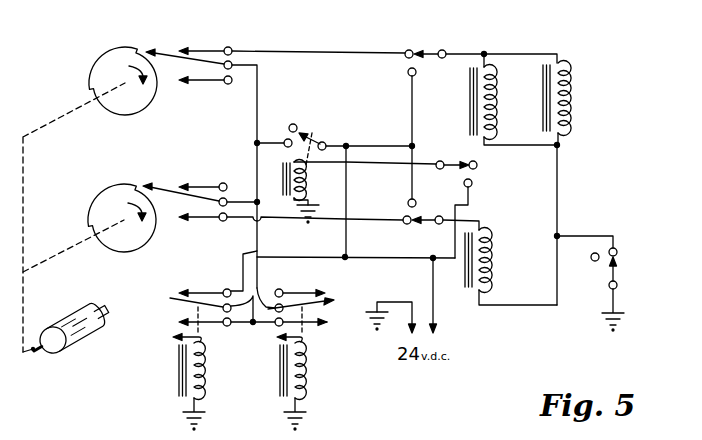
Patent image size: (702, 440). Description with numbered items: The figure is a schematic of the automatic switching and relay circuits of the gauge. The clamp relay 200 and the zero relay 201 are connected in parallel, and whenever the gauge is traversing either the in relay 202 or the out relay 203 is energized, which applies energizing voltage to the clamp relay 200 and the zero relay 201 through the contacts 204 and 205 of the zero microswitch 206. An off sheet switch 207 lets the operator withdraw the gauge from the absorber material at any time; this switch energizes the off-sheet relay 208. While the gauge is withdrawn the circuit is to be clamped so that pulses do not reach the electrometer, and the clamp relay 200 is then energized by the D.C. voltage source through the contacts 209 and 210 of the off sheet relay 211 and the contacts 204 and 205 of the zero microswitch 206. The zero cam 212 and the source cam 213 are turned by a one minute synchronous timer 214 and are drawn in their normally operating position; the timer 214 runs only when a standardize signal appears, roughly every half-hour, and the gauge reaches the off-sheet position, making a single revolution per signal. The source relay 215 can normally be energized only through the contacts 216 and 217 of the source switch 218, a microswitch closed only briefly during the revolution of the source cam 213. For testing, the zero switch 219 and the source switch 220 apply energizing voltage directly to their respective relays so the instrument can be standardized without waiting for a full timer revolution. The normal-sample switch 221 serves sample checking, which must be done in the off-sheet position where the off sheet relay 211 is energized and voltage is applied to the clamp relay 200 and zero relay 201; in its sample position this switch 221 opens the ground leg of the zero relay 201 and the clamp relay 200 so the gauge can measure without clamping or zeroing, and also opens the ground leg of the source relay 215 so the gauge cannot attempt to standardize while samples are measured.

The clamp relay 200 is at (573, 95).
The zero relay 201 is at (497, 99).
The in relay 202 is at (207, 359).
The out relay 203 is at (302, 354).
The contact of zero microswitch 204 is at (236, 64).
The contact of zero microswitch 205 is at (233, 49).
The zero microswitch 206 is at (148, 54).
The off sheet switch 207 is at (458, 170).
The off-sheet relay 208 is at (309, 192).
The contact of off sheet relay 209 is at (328, 146).
The contact of off sheet relay 210 is at (284, 142).
The off sheet relay 211 is at (322, 132).
The zero cam 212 is at (93, 91).
The source cam 213 is at (93, 212).
The one minute synchronous timer 214 is at (103, 335).
The source relay 215 is at (493, 242).
The contact of source switch 216 is at (225, 222).
The contact of source switch 217 is at (227, 197).
The source switch 218 is at (150, 186).
The zero switch 219 is at (441, 55).
The source switch 220 is at (438, 226).
The normal-sample switch 221 is at (619, 273).